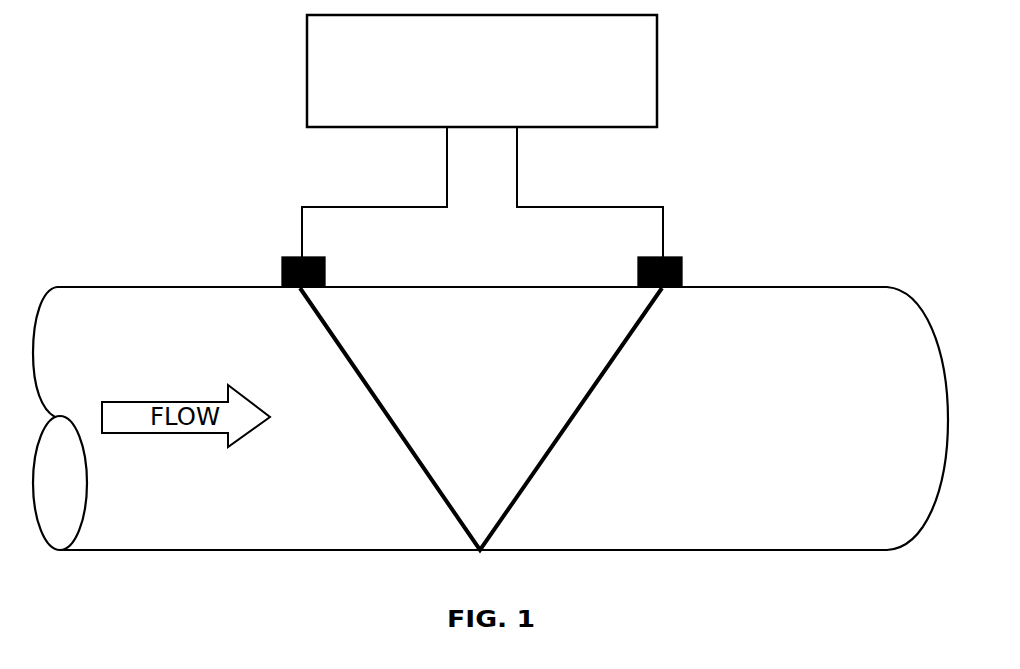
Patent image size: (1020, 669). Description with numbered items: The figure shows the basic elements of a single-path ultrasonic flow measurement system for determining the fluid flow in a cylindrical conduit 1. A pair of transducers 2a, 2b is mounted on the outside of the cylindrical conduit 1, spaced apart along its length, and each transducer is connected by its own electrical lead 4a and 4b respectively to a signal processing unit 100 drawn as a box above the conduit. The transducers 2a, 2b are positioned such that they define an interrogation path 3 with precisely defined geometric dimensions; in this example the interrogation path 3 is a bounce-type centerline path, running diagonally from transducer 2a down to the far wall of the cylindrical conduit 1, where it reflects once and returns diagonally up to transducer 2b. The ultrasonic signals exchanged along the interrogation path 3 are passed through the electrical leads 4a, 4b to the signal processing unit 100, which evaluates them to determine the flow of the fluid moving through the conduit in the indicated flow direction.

The signal processing unit 100 is at (482, 71).
The electrical lead 4a is at (374, 192).
The electrical lead 4b is at (590, 192).
The transducer 2a is at (324, 268).
The transducer 2b is at (636, 268).
The cylindrical conduit 1 is at (490, 418).
The interrogation path 3 is at (481, 419).